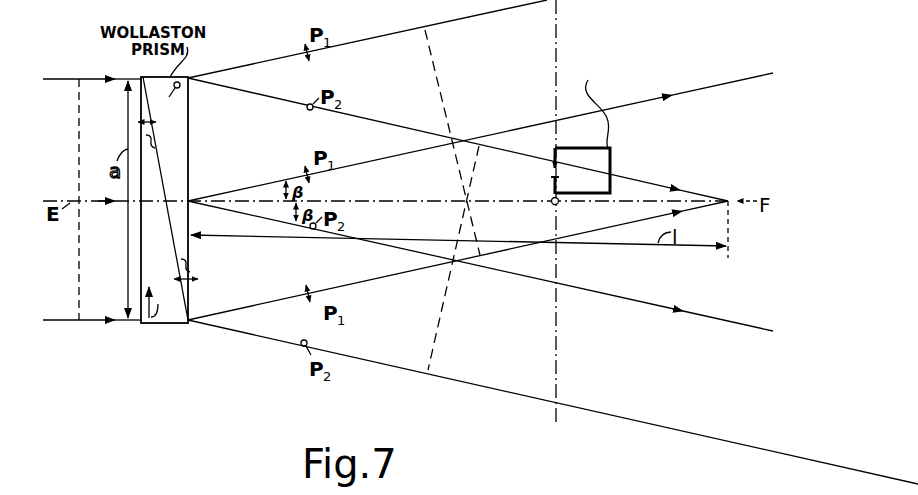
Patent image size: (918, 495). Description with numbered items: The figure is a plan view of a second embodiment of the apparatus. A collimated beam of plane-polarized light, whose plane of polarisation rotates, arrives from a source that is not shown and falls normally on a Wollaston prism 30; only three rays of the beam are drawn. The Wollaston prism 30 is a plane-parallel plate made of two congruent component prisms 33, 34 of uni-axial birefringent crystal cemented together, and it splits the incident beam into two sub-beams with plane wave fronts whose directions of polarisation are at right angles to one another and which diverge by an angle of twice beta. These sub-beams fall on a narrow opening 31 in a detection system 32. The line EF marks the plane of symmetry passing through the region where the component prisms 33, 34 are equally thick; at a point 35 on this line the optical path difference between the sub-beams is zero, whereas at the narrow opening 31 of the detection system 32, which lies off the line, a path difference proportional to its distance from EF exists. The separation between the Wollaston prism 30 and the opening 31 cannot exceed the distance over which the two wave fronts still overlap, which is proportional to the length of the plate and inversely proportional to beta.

The Wollaston prism 30 is at (164, 324).
The narrow opening 31 is at (556, 173).
The detection system 32 is at (602, 141).
The component prism 33 is at (151, 243).
The component prism 34 is at (181, 176).
The point on line EF 35 is at (558, 205).